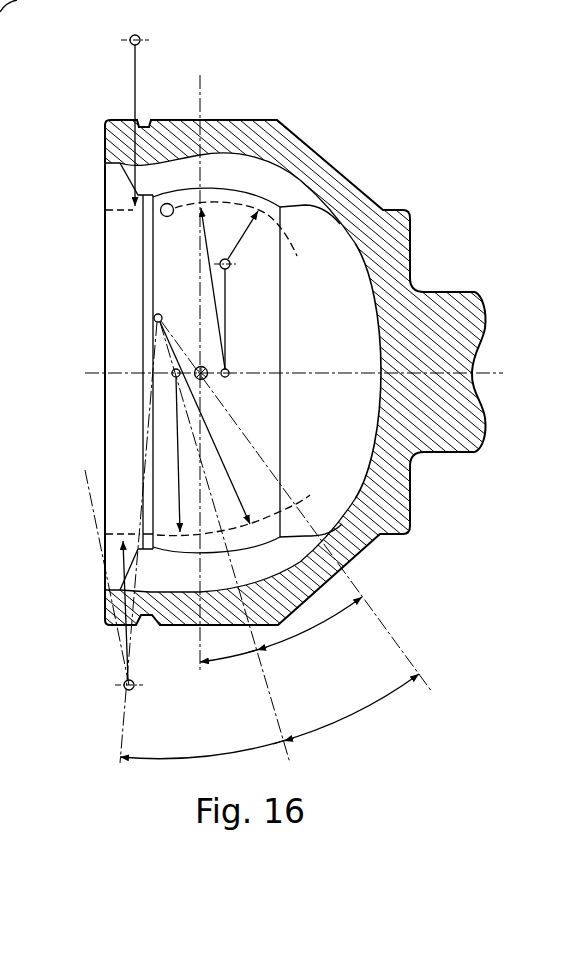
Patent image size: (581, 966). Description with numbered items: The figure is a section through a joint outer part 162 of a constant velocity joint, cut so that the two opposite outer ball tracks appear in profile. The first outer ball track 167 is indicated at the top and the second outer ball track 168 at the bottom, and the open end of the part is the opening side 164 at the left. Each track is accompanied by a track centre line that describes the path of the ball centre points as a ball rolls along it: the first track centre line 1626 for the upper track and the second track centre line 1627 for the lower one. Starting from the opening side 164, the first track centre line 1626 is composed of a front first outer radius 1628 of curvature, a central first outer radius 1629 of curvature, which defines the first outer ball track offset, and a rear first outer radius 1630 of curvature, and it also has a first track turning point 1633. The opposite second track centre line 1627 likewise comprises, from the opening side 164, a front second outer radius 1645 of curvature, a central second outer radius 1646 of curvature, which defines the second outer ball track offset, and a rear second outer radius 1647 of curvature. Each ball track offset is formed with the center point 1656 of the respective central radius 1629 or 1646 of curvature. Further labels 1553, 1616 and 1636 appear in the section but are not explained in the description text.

The joint outer part 162 is at (446, 316).
The opening side 164 is at (69, 199).
The first outer ball track 167 is at (300, 182).
The second outer ball track 168 is at (335, 583).
The adjacent component 1553 is at (0, 82).
The sleeve 1616 is at (152, 287).
The first track centre line 1626 is at (242, 204).
The second track centre line 1627 is at (386, 536).
The front first outer radius of curvature 1628 is at (140, 56).
The central first outer radius of curvature 1629 is at (232, 326).
The rear first outer radius of curvature 1630 is at (242, 241).
The first track turning point 1633 is at (122, 212).
The wavy outer contour 1636 is at (446, 373).
The front second outer radius of curvature 1645 is at (124, 640).
The central second outer radius of curvature 1646 is at (172, 477).
The rear second outer radius of curvature 1647 is at (152, 322).
The center point 1656 is at (170, 377).